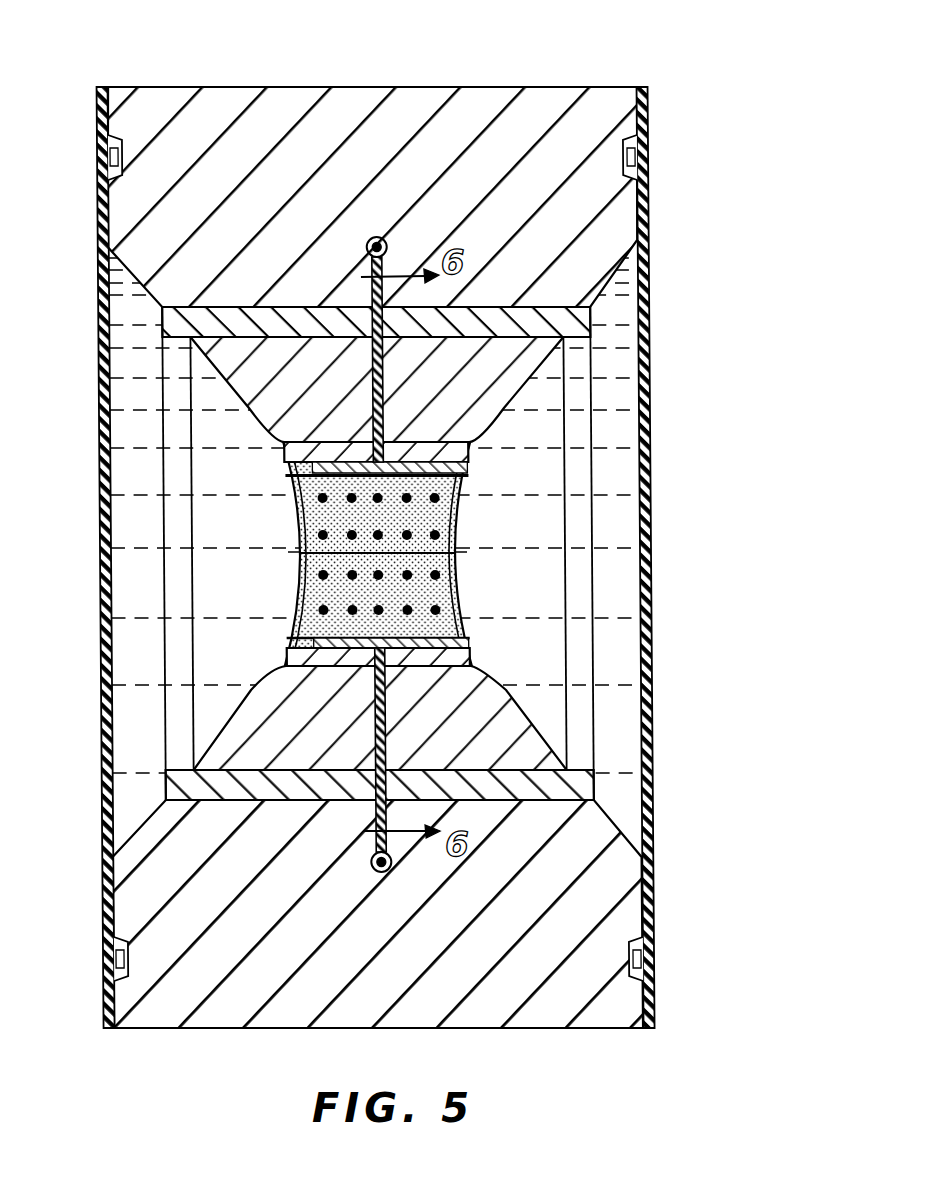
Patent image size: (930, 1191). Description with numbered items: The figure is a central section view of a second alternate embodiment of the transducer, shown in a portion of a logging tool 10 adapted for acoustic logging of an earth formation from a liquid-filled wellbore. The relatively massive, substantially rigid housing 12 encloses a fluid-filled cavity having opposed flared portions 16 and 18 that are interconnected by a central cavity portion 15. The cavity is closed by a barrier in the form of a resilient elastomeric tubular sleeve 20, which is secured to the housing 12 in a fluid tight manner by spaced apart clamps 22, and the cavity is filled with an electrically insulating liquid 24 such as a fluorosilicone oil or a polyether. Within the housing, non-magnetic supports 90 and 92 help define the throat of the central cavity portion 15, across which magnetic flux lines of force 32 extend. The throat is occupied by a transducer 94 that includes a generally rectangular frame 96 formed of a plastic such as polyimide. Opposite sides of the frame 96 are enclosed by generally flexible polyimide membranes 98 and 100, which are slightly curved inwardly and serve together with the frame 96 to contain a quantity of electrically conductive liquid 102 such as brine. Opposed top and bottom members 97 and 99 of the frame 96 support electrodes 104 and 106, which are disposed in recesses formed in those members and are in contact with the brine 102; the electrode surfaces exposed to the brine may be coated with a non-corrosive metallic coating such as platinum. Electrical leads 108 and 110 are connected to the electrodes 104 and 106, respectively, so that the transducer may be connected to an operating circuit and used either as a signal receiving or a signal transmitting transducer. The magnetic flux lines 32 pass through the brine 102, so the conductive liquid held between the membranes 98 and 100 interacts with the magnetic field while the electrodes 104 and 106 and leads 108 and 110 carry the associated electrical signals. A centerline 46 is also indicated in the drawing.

The logging tool 10 is at (555, 78).
The housing 12 is at (479, 87).
The central cavity portion 15 is at (274, 586).
The flared portion 16 is at (620, 362).
The flared portion 18 is at (114, 368).
The resilient elastomeric tubular sleeve 20 is at (651, 297).
The clamps 22 is at (650, 150).
The electrically insulating liquid 24 is at (620, 489).
The magnetic flux lines of force 32 is at (300, 528).
The center line 46 is at (455, 578).
The support 90 is at (488, 417).
The support 92 is at (478, 667).
The transducer 94 is at (472, 530).
The frame 96 is at (246, 800).
The top member 97 is at (297, 447).
The polyimide membrane 98 is at (292, 600).
The bottom member 99 is at (480, 800).
The polyimide membrane 100 is at (480, 625).
The electrically conductive liquid 102 is at (290, 628).
The electrode 104 is at (412, 460).
The electrode 106 is at (313, 666).
The electrical lead 108 is at (372, 262).
The electrical lead 110 is at (372, 815).